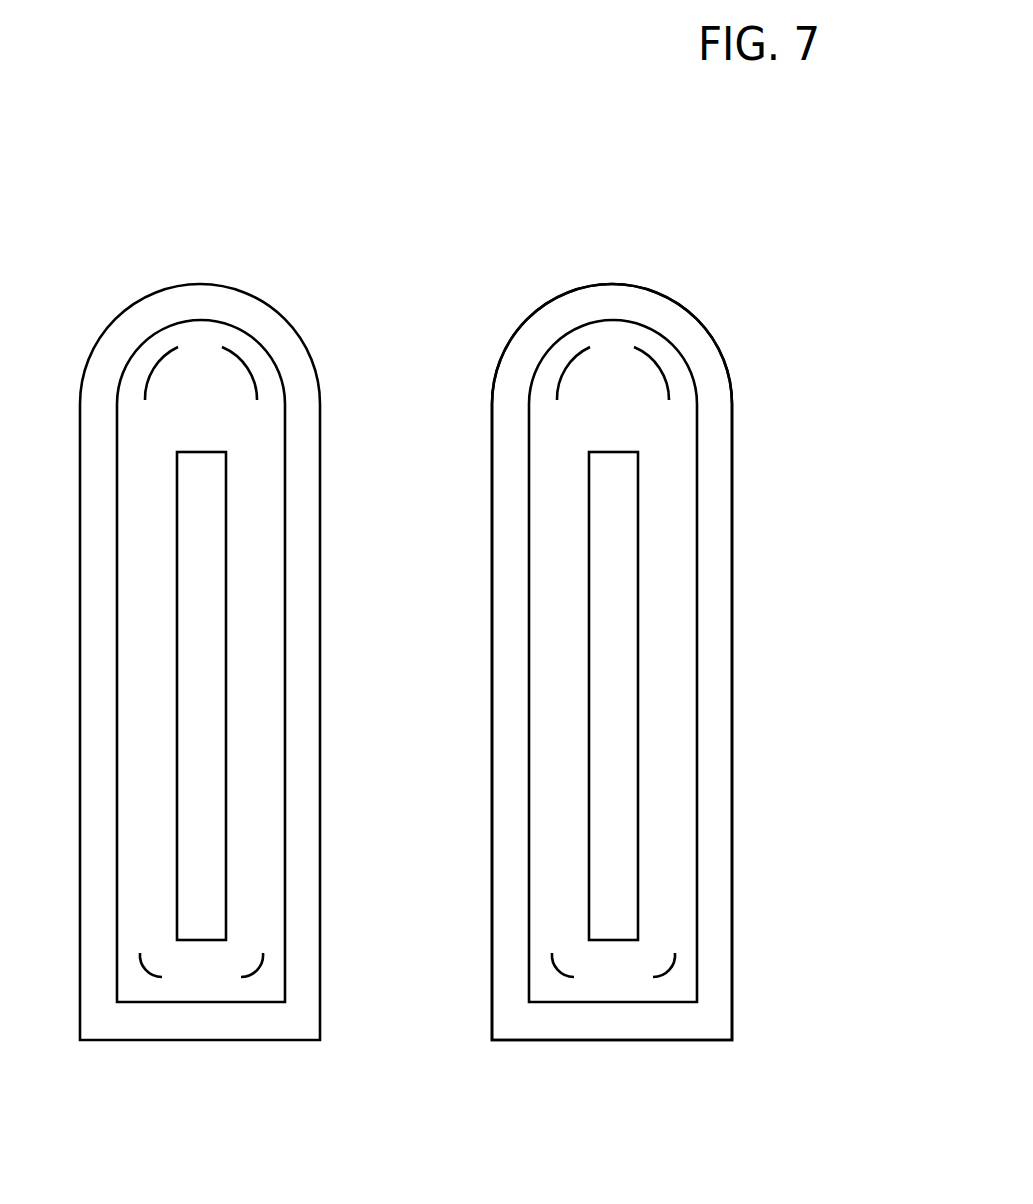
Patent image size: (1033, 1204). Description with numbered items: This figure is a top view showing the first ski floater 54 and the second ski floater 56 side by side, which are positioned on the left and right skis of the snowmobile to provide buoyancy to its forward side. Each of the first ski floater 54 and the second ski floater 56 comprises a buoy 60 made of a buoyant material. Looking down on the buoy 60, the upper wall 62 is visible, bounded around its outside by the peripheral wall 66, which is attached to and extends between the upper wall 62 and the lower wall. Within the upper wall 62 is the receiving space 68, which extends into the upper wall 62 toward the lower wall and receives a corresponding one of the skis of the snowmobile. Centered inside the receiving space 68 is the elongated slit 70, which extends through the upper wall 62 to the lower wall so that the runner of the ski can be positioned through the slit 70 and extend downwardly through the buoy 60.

The first ski floater 54 is at (120, 337).
The second ski floater 56 is at (687, 328).
The buoy 60 is at (675, 617).
The upper wall 62 is at (613, 320).
The peripheral wall 66 is at (733, 518).
The receiving space 68 is at (686, 423).
The slit 70 is at (624, 650).